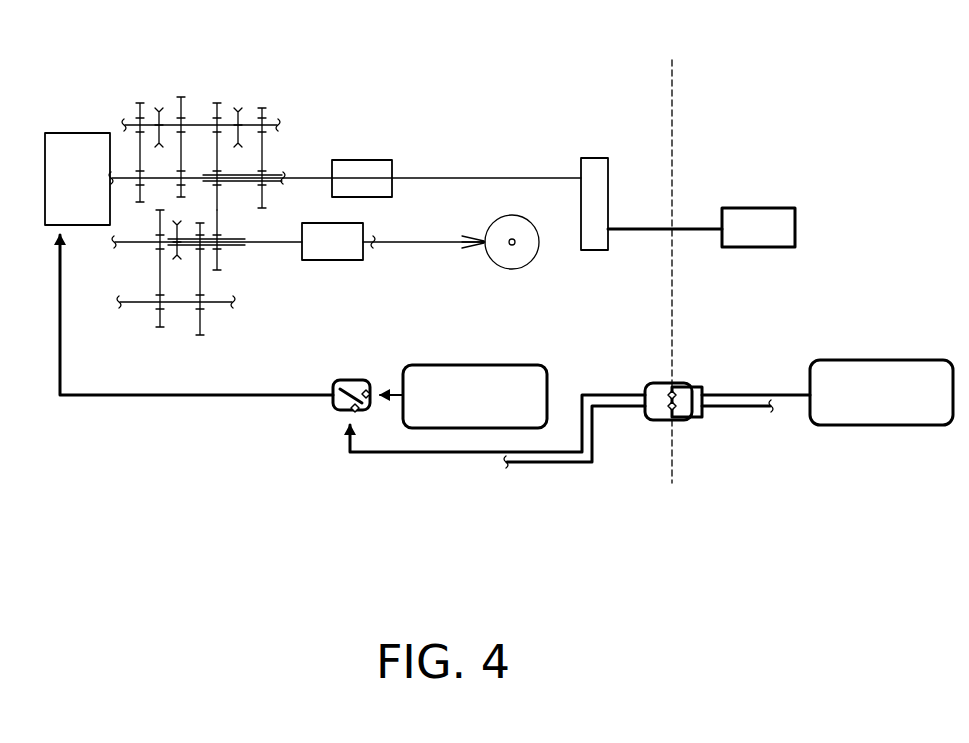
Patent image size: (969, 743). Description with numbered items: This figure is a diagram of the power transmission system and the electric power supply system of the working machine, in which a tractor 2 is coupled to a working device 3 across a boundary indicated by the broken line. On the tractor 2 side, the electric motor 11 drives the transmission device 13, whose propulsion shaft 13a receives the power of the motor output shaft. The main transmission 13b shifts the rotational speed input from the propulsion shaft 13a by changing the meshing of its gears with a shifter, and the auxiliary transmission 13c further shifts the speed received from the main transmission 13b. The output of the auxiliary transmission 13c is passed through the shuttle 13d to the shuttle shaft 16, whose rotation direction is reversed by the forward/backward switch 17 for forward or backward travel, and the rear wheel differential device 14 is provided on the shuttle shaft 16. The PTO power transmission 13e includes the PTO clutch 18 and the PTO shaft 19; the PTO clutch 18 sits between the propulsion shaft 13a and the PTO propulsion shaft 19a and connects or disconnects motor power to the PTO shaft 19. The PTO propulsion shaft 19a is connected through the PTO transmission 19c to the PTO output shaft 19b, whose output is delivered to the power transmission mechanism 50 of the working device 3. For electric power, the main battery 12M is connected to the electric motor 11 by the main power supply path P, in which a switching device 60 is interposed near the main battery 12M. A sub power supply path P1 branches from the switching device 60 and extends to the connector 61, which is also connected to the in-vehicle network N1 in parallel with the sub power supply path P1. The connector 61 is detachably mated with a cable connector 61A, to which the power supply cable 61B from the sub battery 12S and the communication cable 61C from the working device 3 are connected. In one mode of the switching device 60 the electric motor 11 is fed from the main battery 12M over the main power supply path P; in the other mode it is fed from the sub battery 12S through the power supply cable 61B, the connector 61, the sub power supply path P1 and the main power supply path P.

The tractor 2 is at (628, 64).
The working device 3 is at (715, 76).
The electric motor 11 is at (85, 227).
The main battery 12M is at (461, 364).
The sub battery 12S is at (877, 360).
The transmission device 13 is at (345, 201).
The propulsion shaft 13a is at (306, 178).
The main transmission 13b is at (209, 80).
The auxiliary transmission 13c is at (242, 318).
The shuttle 13d is at (350, 263).
The PTO power transmission 13e is at (381, 141).
The rear wheel differential device 14 is at (534, 262).
The shuttle shaft 16 is at (446, 243).
The forward/backward switch 17 is at (375, 238).
The PTO clutch 18 is at (352, 165).
The PTO shaft 19 is at (619, 217).
The PTO propulsion shaft 19a is at (540, 178).
The PTO output shaft 19b is at (665, 176).
The PTO transmission 19c is at (594, 252).
The power transmission mechanism 50 is at (753, 222).
The switching device 60 is at (335, 410).
The connector 61 is at (727, 402).
The cable connector 61A is at (700, 419).
The power supply cable 61B is at (732, 395).
The communication cable 61C is at (760, 410).
The main power supply path P is at (172, 398).
The sub power supply path P1 is at (597, 394).
The in-vehicle network N1 is at (595, 438).